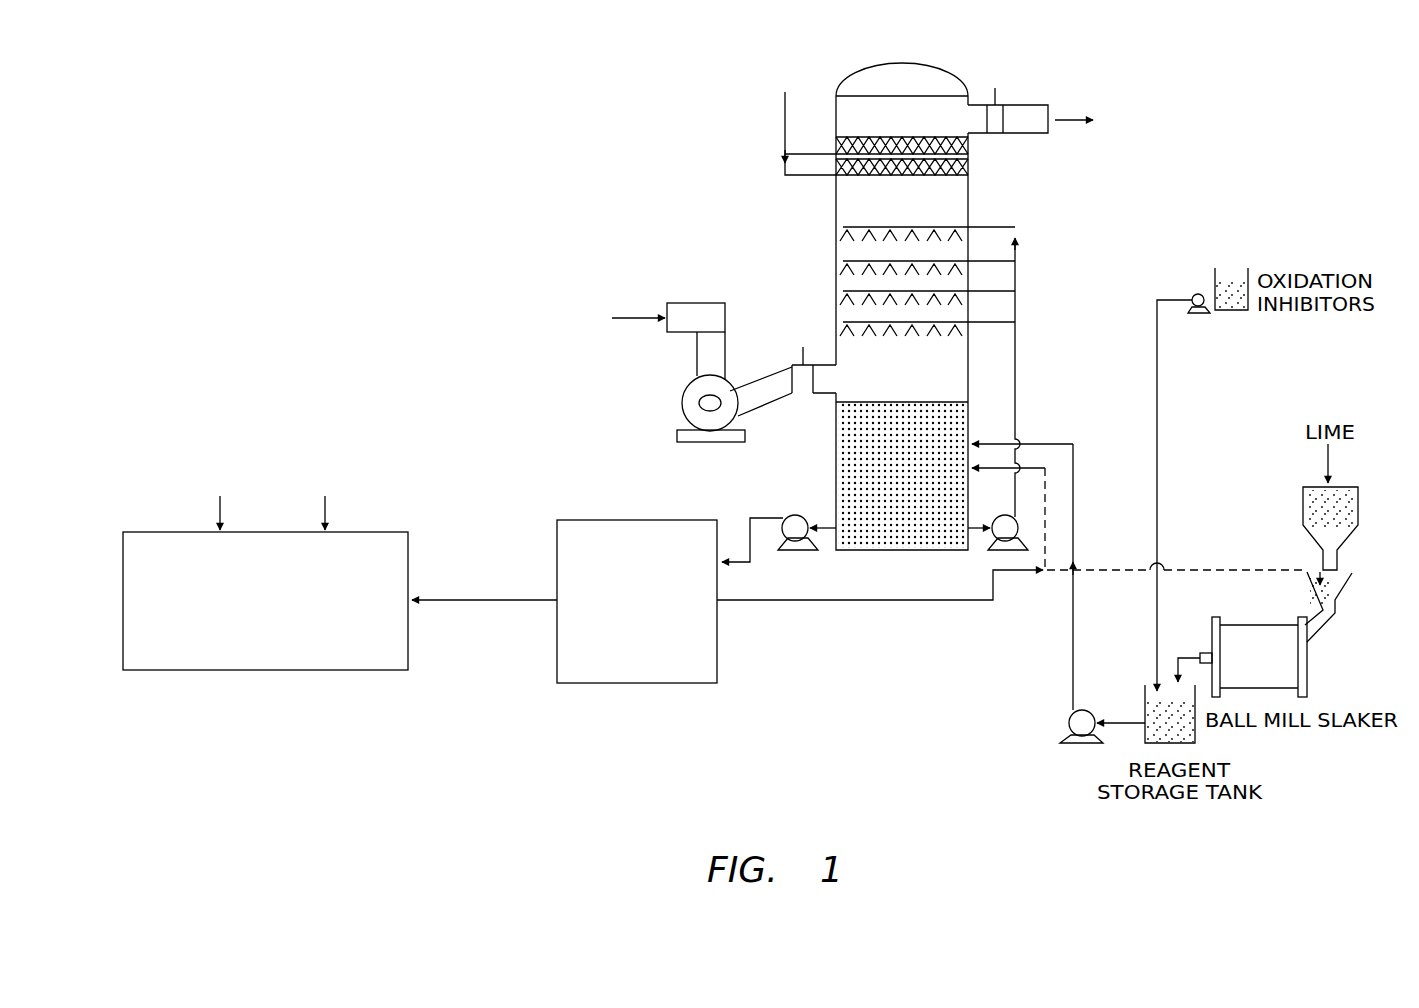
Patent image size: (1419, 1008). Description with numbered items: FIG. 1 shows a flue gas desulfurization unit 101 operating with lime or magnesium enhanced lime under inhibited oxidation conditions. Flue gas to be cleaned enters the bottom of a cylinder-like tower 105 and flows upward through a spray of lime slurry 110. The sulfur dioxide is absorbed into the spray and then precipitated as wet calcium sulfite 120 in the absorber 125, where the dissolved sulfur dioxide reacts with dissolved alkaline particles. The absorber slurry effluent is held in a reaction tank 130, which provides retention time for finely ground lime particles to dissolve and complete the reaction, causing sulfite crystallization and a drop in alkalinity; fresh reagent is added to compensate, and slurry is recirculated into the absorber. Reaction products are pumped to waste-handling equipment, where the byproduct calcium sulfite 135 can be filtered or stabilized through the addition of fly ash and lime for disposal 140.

The flue gas desulfurization system 101 is at (538, 307).
The cylinder-like tower 105 is at (970, 210).
The spray of lime slurry 110 is at (868, 243).
The wet calcium sulfite 120 is at (862, 508).
The absorber 125 is at (834, 446).
The reaction tank 130 is at (607, 683).
The byproduct calcium sulfite 135 is at (510, 602).
The disposal 140 is at (228, 670).